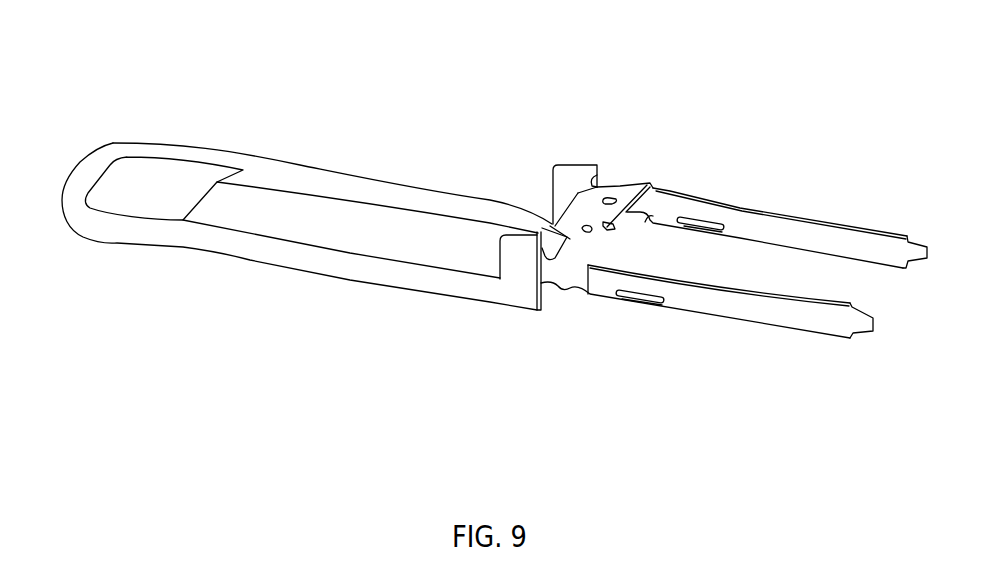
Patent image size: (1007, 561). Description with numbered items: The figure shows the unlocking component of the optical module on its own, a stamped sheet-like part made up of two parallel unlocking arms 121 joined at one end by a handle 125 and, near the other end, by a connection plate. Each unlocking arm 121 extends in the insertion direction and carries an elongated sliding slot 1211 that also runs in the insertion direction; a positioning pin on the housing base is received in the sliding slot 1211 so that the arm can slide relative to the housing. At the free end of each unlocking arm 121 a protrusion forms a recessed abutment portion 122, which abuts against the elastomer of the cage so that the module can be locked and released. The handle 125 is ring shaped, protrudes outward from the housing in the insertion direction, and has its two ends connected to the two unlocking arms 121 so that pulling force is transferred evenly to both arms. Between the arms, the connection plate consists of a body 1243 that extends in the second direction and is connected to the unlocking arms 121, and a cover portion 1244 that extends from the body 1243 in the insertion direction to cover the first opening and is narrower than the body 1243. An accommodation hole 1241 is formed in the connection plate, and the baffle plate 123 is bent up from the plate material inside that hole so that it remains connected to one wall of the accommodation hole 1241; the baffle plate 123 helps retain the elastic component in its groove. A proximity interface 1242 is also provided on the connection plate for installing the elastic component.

The handle 125 is at (397, 193).
The cover portion 1244 is at (555, 222).
The body 1243 is at (615, 187).
The baffle plate 123 is at (626, 212).
The accommodation hole 1241 is at (613, 230).
The proximity interface 1242 is at (585, 232).
The unlocking arm 121 is at (738, 315).
The sliding slot 1211 is at (640, 300).
The abutment portion 122 is at (853, 320).